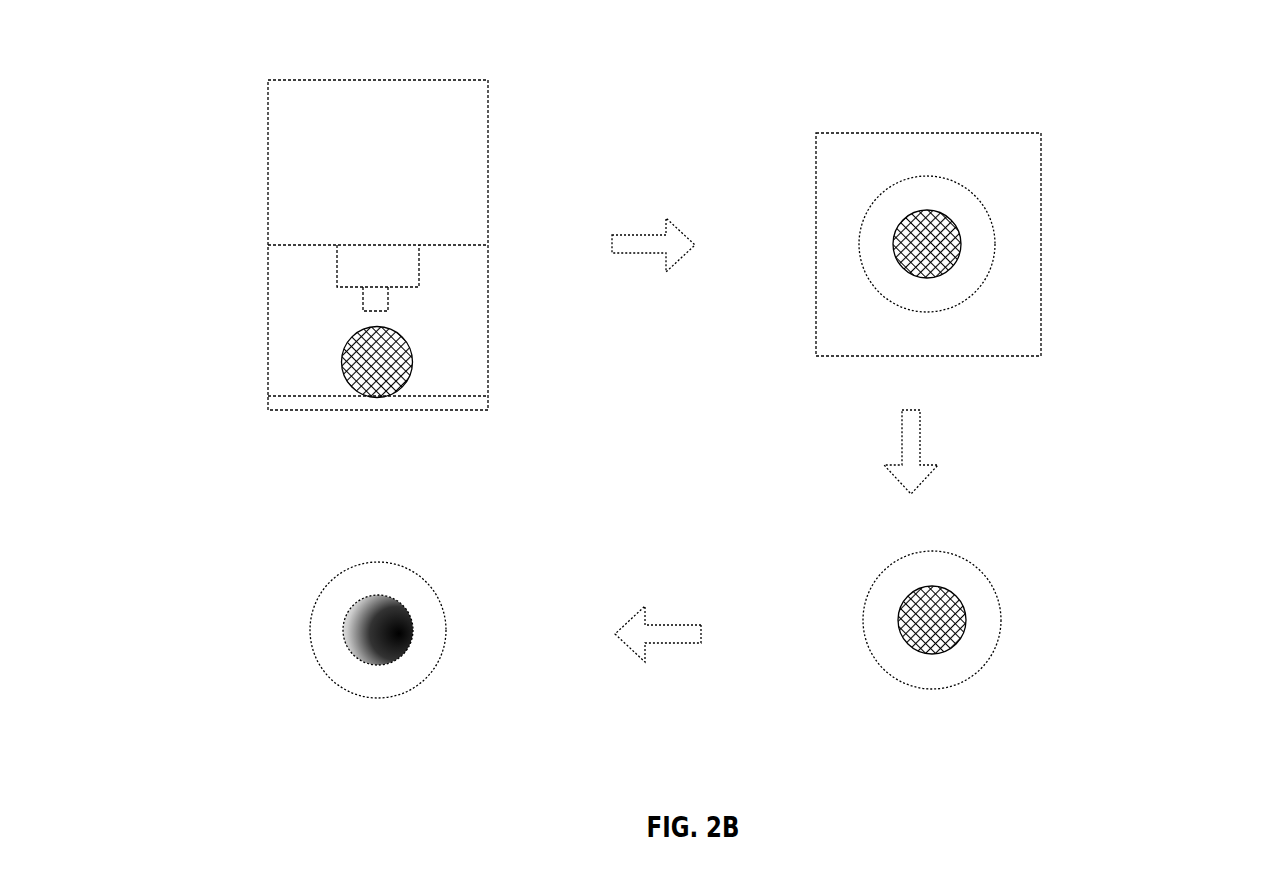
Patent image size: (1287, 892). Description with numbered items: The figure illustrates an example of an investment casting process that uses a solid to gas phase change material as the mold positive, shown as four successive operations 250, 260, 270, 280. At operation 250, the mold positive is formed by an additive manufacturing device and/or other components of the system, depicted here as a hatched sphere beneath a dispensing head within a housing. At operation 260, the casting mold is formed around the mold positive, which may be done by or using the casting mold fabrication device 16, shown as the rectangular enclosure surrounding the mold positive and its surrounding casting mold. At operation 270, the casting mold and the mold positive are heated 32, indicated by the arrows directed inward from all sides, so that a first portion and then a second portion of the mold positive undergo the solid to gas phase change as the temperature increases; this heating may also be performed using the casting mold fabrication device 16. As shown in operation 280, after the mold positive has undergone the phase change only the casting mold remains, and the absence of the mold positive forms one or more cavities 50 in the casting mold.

The operation 250 is at (307, 230).
The operation 260 is at (958, 203).
The operation 270 is at (898, 612).
The operation 280 is at (342, 588).
The casting mold fabrication device 16 is at (1073, 157).
The heating 32 is at (947, 545).
The cavity 50 is at (345, 641).